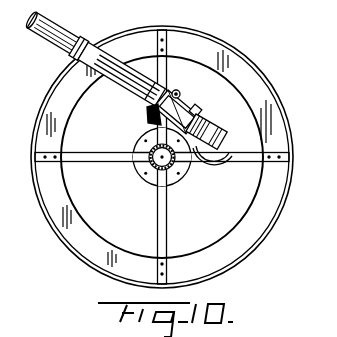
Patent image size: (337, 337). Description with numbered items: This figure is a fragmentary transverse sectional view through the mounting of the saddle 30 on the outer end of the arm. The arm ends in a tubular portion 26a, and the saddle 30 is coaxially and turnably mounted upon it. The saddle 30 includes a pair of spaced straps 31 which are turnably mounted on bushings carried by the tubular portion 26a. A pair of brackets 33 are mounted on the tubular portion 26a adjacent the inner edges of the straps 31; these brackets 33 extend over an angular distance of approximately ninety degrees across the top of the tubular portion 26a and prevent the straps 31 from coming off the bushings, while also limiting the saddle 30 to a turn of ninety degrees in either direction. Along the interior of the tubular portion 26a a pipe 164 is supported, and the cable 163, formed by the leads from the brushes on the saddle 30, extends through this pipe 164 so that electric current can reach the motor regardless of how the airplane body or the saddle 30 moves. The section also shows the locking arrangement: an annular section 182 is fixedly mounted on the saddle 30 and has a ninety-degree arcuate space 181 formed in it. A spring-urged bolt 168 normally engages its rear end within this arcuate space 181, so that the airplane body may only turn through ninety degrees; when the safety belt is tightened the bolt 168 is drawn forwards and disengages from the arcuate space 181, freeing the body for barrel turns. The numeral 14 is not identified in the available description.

The tubular portion 26a is at (42, 38).
The annular section 182 is at (261, 88).
The arcuate space 181 is at (244, 233).
The bolt 168 is at (273, 190).
The wheel spokes and hub 14 is at (148, 181).
The straps 31 is at (157, 96).
The saddle 30 is at (144, 122).
The brackets 33 is at (195, 93).
The pipe 164 is at (224, 130).
The cable 163 is at (217, 167).